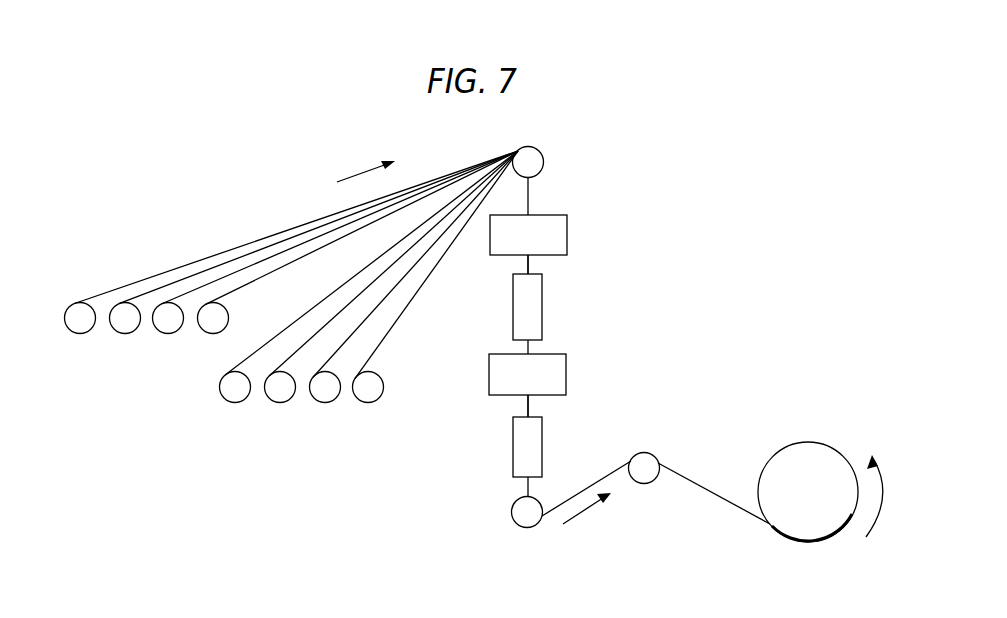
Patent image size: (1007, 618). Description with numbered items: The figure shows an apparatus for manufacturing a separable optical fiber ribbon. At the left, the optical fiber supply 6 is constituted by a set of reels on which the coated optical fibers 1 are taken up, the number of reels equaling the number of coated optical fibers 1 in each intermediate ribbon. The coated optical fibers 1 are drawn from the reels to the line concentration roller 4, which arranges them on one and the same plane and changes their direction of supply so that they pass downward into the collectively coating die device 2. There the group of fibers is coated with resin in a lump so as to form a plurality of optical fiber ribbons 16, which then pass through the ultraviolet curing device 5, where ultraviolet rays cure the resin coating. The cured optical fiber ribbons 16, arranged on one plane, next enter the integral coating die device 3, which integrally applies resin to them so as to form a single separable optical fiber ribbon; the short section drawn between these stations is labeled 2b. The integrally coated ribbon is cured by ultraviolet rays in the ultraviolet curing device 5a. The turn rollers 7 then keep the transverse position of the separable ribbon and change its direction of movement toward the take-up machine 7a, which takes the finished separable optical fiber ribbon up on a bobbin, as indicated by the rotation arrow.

The coated optical fiber 1 is at (234, 292).
The collectively coating die device 2 is at (568, 235).
The optical fiber ribbon 16 is at (531, 265).
The ultraviolet curing device 5 is at (543, 305).
The integral coating die device 3 is at (567, 373).
The web between sections 2b is at (530, 403).
The ultraviolet curing device 5a is at (544, 445).
The line concentration roller 4 is at (545, 162).
The optical fiber supply 6 is at (57, 383).
The turn roller 7 is at (512, 512).
The take-up machine 7a is at (806, 441).